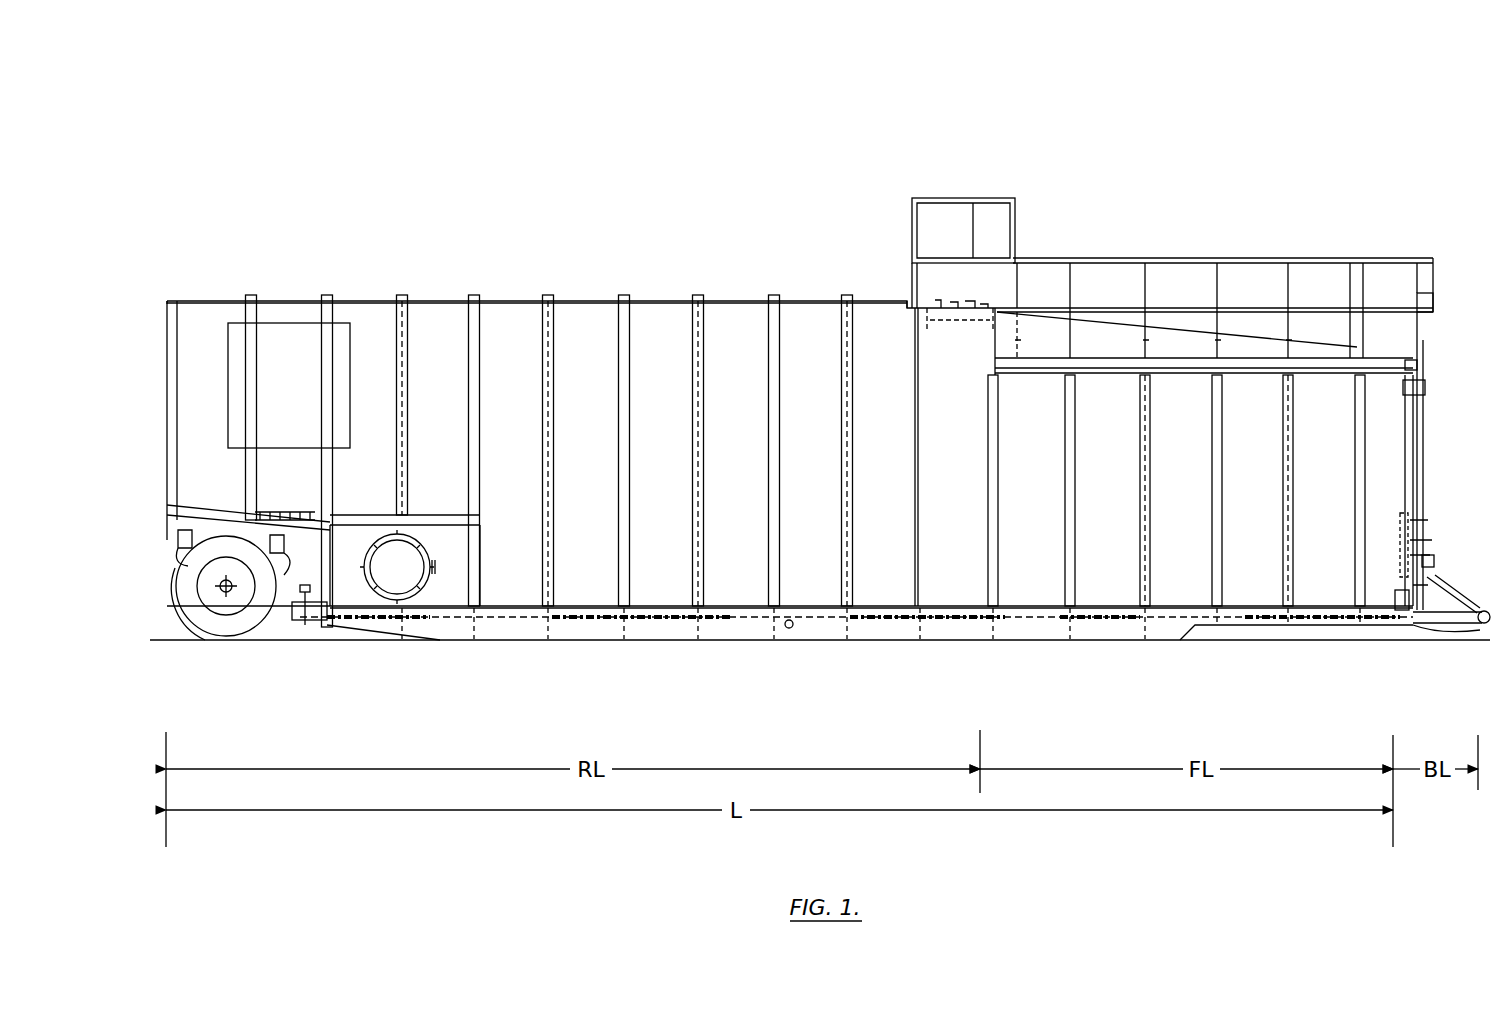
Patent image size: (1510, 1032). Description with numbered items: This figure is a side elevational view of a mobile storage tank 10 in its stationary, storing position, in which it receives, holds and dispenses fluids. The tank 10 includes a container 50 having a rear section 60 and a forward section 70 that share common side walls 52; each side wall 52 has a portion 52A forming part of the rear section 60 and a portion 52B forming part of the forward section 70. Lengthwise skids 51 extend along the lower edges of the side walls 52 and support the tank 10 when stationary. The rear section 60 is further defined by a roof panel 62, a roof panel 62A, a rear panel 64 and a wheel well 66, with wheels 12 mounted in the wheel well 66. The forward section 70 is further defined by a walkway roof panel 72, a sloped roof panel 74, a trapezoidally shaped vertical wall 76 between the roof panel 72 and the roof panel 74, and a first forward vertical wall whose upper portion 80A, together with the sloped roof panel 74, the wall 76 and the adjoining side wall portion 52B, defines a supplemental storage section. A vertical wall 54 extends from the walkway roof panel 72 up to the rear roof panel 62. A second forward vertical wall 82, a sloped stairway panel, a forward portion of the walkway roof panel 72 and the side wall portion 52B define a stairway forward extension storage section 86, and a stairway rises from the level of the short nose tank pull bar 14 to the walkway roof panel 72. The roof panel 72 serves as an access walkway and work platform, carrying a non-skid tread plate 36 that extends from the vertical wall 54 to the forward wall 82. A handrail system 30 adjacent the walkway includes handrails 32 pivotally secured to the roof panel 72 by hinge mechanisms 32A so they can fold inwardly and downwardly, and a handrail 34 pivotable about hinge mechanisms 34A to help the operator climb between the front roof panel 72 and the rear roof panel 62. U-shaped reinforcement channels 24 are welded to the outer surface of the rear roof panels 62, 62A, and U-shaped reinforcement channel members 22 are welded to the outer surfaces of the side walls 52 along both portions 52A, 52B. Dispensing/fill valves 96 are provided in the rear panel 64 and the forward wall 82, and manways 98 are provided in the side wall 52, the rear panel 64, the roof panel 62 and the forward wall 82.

The mobile storage tank 10 is at (830, 128).
The wheels 12 is at (200, 625).
The short nose tank pull bar 14 is at (1445, 615).
The U-shaped reinforcement channel members 22 is at (690, 425).
The U-shaped reinforcement channels 24 is at (560, 295).
The handrail system 30 is at (1225, 230).
The handrails 32 is at (1340, 260).
The hinge mechanisms 32A is at (1363, 355).
The handrail 34 is at (945, 200).
The hinge mechanisms 34A is at (910, 300).
The tread plate 36 is at (1100, 373).
The container 50 is at (848, 258).
The lengthwise skids 51 is at (660, 628).
The side walls 52 is at (730, 352).
The side wall portion 52A is at (580, 592).
The side wall portion 52B is at (1106, 590).
The vertical wall 54 is at (997, 336).
The rear section 60 is at (510, 290).
The roof panel 62 is at (440, 301).
The roof panel 62A is at (915, 330).
The rear panel 64 is at (165, 315).
The wheel well 66 is at (283, 625).
The forward section 70 is at (1127, 238).
The walkway roof panel 72 is at (1135, 380).
The sloped roof panel 74 is at (1253, 333).
The trapezoidally shaped vertical wall 76 is at (1100, 337).
The upper portion of forward wall 80A is at (1408, 265).
The second forward vertical wall 82 is at (1413, 442).
The stairway forward extension storage section 86 is at (1428, 462).
The dispensing/fill valves 96 is at (300, 620).
The manways 98 is at (940, 310).